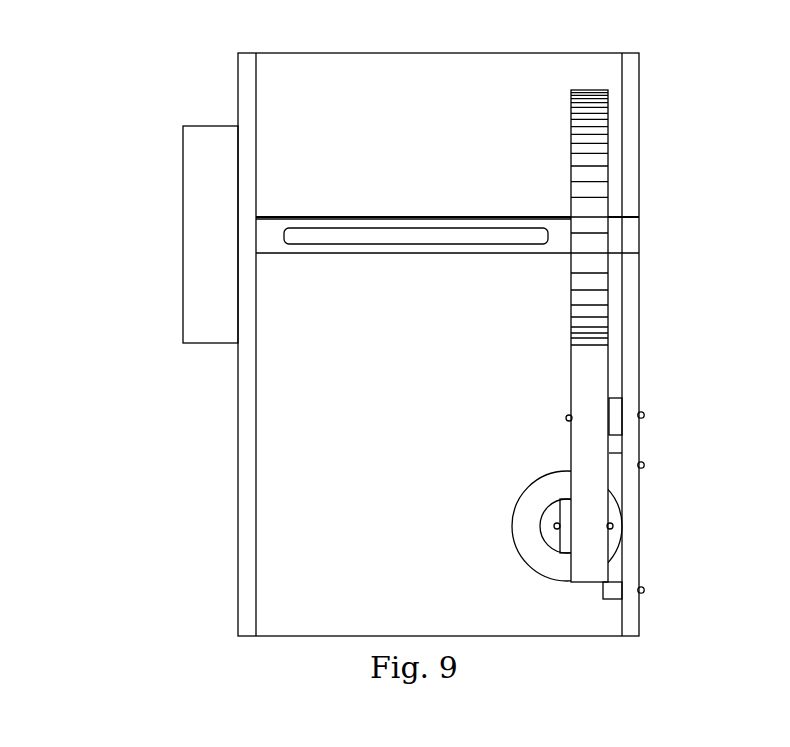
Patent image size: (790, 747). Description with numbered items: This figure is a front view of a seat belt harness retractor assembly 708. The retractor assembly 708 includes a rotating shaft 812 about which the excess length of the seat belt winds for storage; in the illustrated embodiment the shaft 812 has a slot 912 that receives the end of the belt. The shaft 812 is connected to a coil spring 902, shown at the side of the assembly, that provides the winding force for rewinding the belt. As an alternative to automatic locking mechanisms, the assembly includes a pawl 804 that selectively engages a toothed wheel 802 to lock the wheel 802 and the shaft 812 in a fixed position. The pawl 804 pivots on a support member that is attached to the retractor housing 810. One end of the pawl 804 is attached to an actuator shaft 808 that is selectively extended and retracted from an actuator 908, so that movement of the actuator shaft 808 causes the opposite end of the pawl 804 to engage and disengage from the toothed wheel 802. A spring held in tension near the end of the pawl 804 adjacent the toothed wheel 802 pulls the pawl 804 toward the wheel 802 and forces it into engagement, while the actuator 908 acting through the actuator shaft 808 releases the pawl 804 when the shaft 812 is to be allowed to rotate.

The seat belt harness retractor assembly 708 is at (182, 53).
The toothed wheel 802 is at (571, 145).
The pawl 804 is at (571, 403).
The actuator shaft 808 is at (546, 544).
The retractor housing 810 is at (347, 456).
The rotating shaft 812 is at (358, 216).
The coil spring 902 is at (183, 178).
The actuator 908 is at (513, 512).
The slot 912 is at (386, 245).